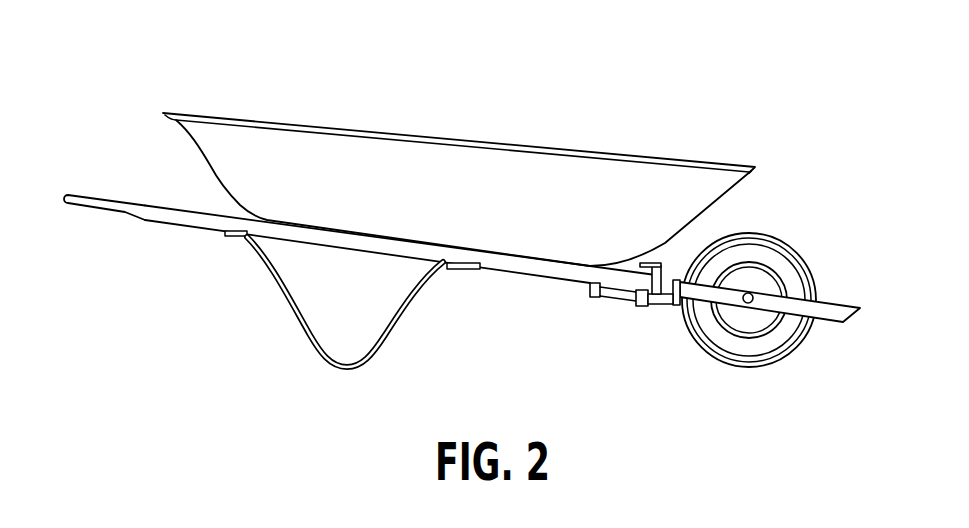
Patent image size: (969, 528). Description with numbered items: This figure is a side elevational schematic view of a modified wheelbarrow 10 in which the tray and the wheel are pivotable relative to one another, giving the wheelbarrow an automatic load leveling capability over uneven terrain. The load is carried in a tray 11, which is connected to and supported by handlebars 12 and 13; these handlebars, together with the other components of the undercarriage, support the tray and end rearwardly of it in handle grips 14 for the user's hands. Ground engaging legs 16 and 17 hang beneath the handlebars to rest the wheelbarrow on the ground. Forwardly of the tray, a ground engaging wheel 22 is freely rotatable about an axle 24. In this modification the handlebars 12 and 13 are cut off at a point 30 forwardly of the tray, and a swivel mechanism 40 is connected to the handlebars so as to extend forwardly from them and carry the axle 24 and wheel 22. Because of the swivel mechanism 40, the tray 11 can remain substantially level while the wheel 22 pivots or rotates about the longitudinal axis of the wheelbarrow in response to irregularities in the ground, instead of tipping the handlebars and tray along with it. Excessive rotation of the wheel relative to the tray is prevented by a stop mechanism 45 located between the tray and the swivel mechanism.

The wheelbarrow 10 is at (501, 130).
The tray 11 is at (607, 155).
The handlebar 12 is at (398, 286).
The handlebar 13 is at (443, 268).
The handle grip 14 is at (98, 207).
The ground engaging leg 16 is at (321, 299).
The ground engaging leg 17 is at (283, 286).
The ground engaging wheel 22 is at (783, 358).
The axle 24 is at (756, 295).
The cut-off point 30 is at (623, 305).
The swivel mechanism 40 is at (657, 318).
The stop mechanism 45 is at (652, 262).